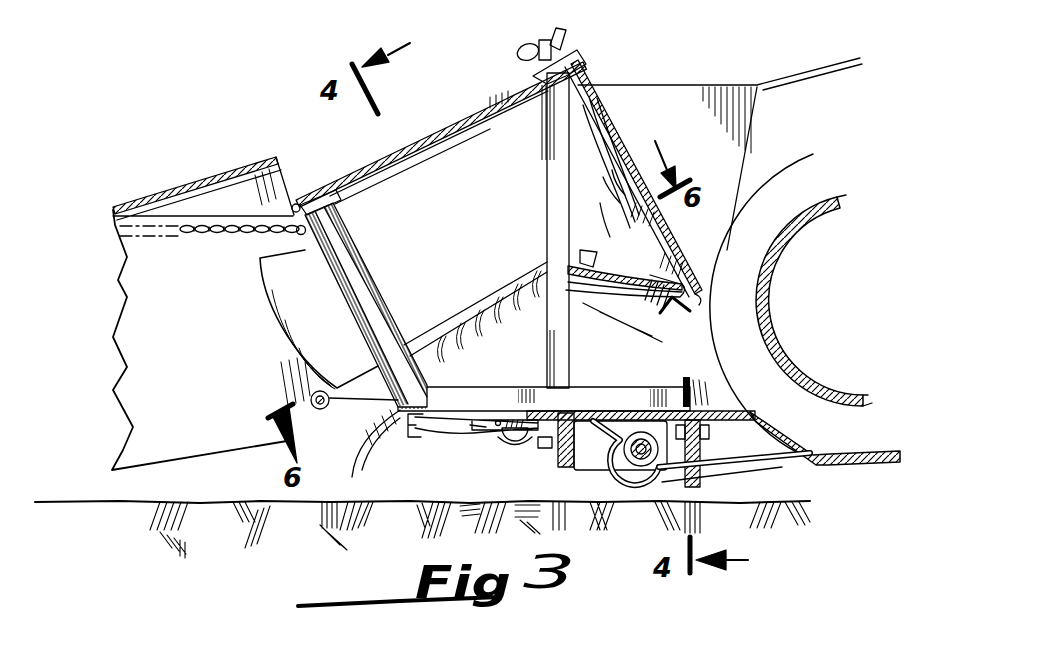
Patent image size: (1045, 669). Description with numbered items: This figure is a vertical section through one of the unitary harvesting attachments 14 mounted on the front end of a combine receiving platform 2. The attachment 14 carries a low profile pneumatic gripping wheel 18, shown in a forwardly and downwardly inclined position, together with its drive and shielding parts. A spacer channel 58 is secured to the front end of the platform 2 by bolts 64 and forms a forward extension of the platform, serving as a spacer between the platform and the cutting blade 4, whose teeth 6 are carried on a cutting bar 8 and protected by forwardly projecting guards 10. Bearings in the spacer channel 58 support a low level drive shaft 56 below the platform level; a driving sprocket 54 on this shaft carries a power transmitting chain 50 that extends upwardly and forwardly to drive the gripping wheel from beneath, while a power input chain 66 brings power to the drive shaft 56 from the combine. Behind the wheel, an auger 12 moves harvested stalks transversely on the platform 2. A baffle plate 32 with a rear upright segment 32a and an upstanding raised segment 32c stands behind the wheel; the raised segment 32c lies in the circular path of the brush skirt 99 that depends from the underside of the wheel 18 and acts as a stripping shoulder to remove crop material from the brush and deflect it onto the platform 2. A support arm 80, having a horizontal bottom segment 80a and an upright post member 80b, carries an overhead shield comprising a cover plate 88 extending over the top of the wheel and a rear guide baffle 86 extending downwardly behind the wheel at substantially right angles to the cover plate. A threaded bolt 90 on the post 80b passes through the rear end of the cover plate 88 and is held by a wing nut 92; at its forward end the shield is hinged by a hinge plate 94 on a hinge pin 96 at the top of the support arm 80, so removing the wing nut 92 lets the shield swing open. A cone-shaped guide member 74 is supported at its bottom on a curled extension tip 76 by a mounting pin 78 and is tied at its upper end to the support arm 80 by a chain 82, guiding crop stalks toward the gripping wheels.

The receiving platform 2 is at (720, 400).
The cutting blade 4 is at (478, 431).
The teeth 6 is at (498, 420).
The cutting bar 8 is at (522, 450).
The guards 10 is at (432, 438).
The auger 12 is at (750, 262).
The harvesting attachment 14 is at (447, 98).
The rotary gripping member 18 is at (458, 224).
The baffle plate 32 is at (601, 264).
The rear upright baffle segment 32a is at (630, 350).
The upstanding raised segment 32c is at (625, 263).
The chain 50 is at (640, 472).
The driving sprocket 54 is at (618, 456).
The drive shaft 56 is at (637, 452).
The spacer channel 58 is at (670, 405).
The bolts 64 is at (702, 436).
The power input chain 66 is at (775, 462).
The cone-shaped guide member 74 is at (168, 205).
The curled extension tip 76 is at (333, 394).
The mounting pin 78 is at (328, 410).
The support arm 80 is at (380, 223).
The horizontal bottom segment 80a is at (598, 389).
The upright post member 80b is at (548, 212).
The chain 82 is at (203, 234).
The guide baffle 86 is at (590, 72).
The cover plate 88 is at (505, 92).
The threaded fastening bolt 90 is at (545, 45).
The wing nut 92 is at (563, 38).
The hinge plate 94 is at (326, 195).
The hinge pin 96 is at (298, 205).
The brush skirt 99 is at (355, 455).